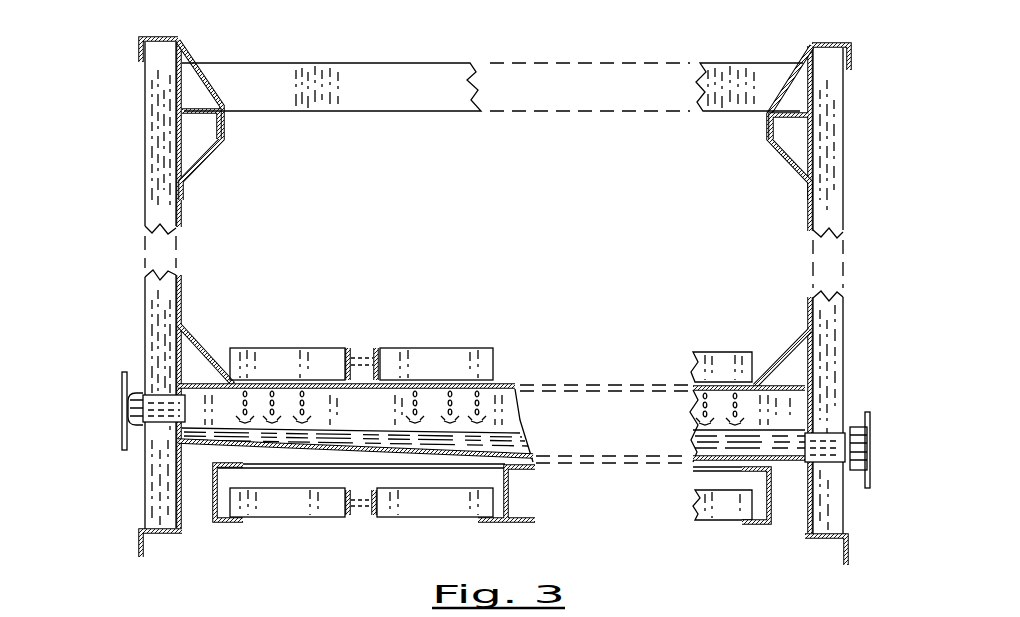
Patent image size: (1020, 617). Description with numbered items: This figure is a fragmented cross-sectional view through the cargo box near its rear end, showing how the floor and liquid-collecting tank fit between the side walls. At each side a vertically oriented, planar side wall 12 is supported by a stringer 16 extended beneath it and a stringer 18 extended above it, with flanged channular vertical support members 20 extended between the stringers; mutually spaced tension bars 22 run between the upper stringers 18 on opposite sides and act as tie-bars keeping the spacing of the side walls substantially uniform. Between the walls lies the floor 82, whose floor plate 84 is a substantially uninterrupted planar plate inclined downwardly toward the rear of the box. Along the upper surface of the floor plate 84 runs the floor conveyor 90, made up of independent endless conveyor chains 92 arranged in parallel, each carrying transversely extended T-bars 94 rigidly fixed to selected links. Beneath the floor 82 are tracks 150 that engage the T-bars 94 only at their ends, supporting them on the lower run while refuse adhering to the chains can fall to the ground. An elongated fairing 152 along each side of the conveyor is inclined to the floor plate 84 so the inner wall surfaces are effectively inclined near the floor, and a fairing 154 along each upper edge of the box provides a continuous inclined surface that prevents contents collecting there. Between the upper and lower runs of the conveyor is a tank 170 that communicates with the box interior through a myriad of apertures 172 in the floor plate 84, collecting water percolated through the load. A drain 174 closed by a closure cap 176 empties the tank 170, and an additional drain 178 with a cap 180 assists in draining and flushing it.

The side wall 12 is at (172, 220).
The stringer 16 is at (136, 545).
The stringer 18 is at (193, 113).
The vertical support member 20 is at (146, 118).
The tension bar 22 is at (381, 62).
The floor 82 is at (215, 445).
The floor plate 84 is at (511, 383).
The floor conveyor 90 is at (410, 335).
The conveyor chain 92 is at (362, 352).
The T-bar 94 is at (455, 350).
The track 150 is at (228, 520).
The fairing 152 is at (205, 347).
The fairing 154 is at (190, 62).
The tank 170 is at (510, 413).
The aperture 172 is at (302, 385).
The drain 174 is at (818, 443).
The closure cap 176 is at (860, 447).
The drain 178 is at (165, 393).
The cap 180 is at (133, 405).